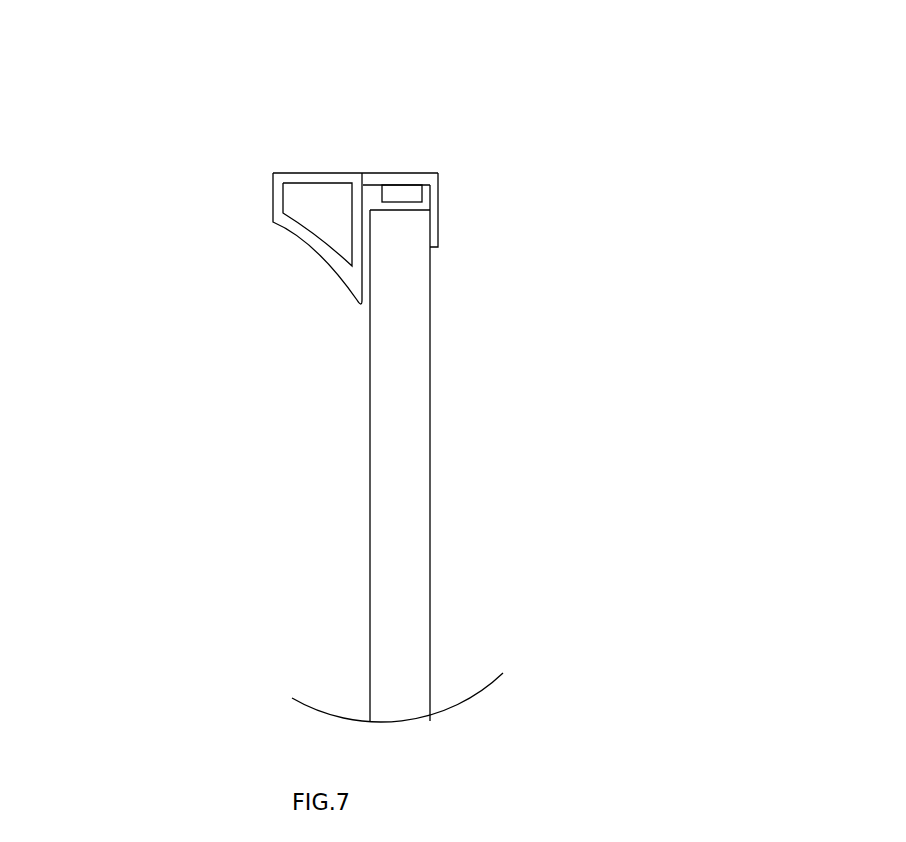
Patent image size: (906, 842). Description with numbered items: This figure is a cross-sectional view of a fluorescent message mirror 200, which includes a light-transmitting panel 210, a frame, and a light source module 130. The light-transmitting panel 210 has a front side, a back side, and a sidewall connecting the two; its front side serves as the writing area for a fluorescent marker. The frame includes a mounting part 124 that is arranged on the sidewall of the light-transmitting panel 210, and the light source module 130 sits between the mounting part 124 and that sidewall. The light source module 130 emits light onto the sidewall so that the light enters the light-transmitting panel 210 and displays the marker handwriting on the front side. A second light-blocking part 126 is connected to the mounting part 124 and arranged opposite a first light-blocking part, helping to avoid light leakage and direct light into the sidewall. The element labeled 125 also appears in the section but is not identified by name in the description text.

The fluorescent message mirror 200 is at (198, 150).
The light-transmitting panel 210 is at (390, 650).
The mounting part 124 is at (408, 175).
The light source module 130 is at (421, 186).
The second light-blocking part 126 is at (437, 247).
The reinforcing gusset 125 is at (363, 282).